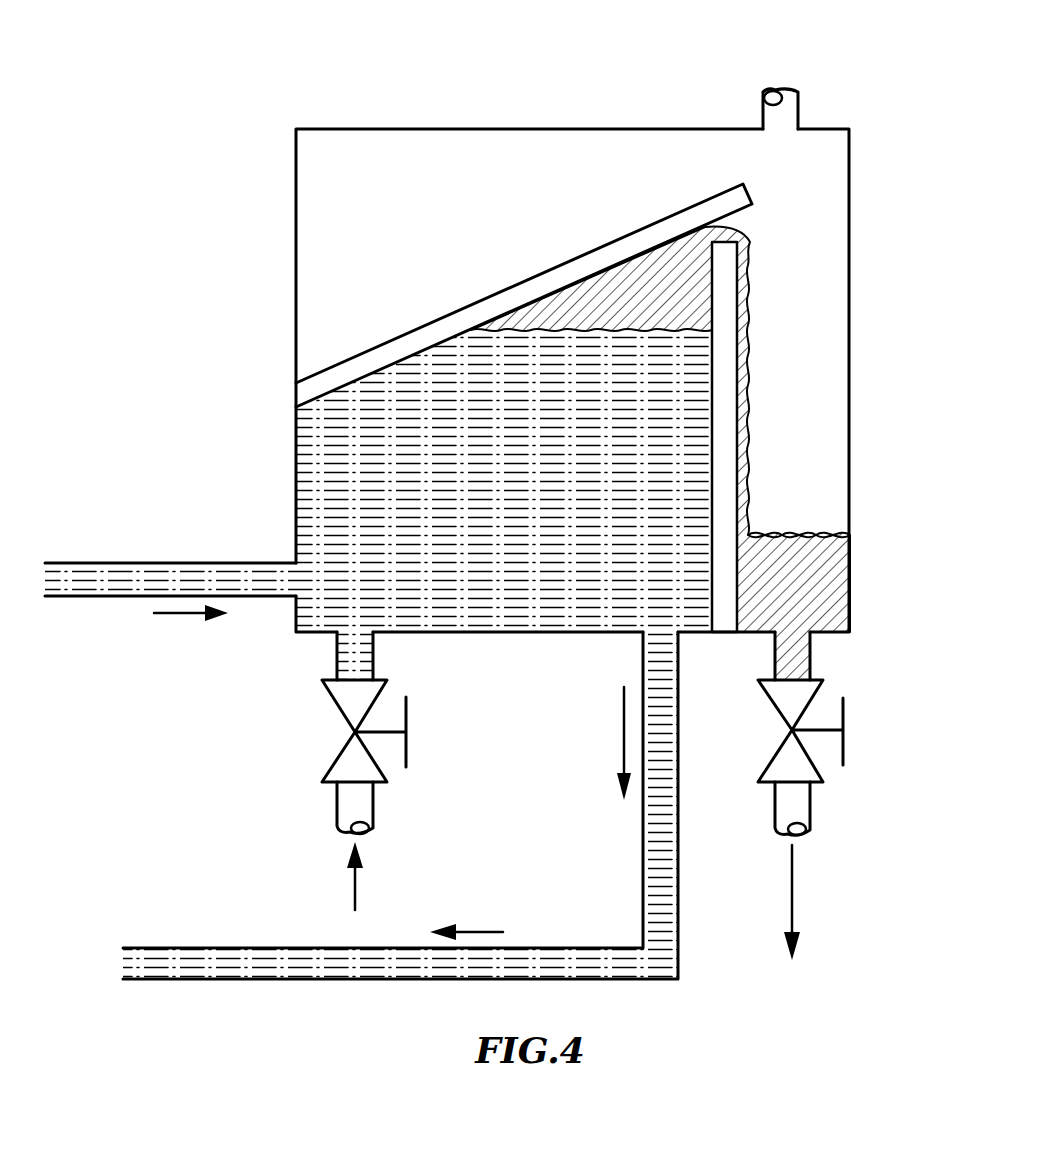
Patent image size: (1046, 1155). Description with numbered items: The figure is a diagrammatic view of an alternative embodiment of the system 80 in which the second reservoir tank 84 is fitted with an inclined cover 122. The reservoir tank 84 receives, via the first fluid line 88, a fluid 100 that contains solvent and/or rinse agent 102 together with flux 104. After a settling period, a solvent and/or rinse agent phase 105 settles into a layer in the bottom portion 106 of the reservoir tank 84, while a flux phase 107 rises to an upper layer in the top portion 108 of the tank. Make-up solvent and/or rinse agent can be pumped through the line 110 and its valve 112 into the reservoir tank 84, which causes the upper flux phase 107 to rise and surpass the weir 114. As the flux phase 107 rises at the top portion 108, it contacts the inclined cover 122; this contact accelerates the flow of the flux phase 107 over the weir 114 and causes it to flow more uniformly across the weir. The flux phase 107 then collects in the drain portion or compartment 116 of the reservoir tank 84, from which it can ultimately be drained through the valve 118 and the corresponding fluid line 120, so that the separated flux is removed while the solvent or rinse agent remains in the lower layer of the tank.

The system 80 is at (246, 86).
The second reservoir tank 84 is at (849, 221).
The first fluid line 88 is at (255, 597).
The fluid 100 is at (141, 580).
The solvent and/or rinse agent 102 is at (207, 580).
The flux 104 is at (272, 580).
The solvent and/or rinse agent phase 105 is at (680, 400).
The bottom portion 106 is at (296, 436).
The flux phase 107 is at (602, 310).
The top portion 108 is at (296, 279).
The line 110 is at (337, 822).
The valve 112 is at (406, 718).
The weir 114 is at (722, 323).
The drain portion or compartment 116 is at (849, 549).
The valve 118 is at (843, 718).
The fluid line 120 is at (792, 893).
The inclined cover 122 is at (747, 192).